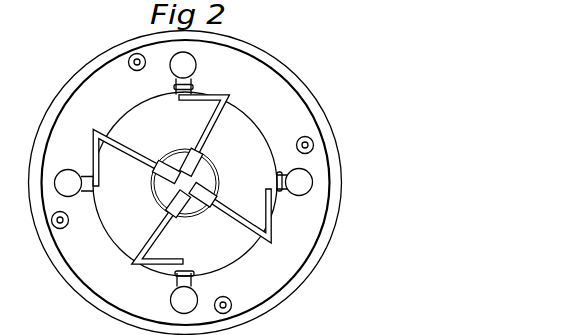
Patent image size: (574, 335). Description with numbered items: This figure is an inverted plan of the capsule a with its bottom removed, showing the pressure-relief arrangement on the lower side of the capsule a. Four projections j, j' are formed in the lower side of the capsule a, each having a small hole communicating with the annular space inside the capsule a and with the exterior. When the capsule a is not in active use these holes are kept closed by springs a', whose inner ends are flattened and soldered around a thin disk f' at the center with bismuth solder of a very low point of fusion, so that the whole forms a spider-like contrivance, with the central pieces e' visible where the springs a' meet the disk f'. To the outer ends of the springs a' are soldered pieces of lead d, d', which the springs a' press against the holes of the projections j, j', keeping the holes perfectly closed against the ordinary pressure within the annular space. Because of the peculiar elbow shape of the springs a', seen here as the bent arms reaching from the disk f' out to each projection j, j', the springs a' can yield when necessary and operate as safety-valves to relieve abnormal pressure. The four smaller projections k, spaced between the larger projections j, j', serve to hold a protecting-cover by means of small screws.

The capsule a is at (196, 183).
The springs a' is at (182, 179).
The collar d is at (175, 96).
The pieces of lead d' is at (237, 216).
The inner blocks e' is at (185, 183).
The thin disk f' is at (193, 183).
The projections j is at (177, 183).
The knob j' is at (177, 191).
The projections k is at (145, 64).